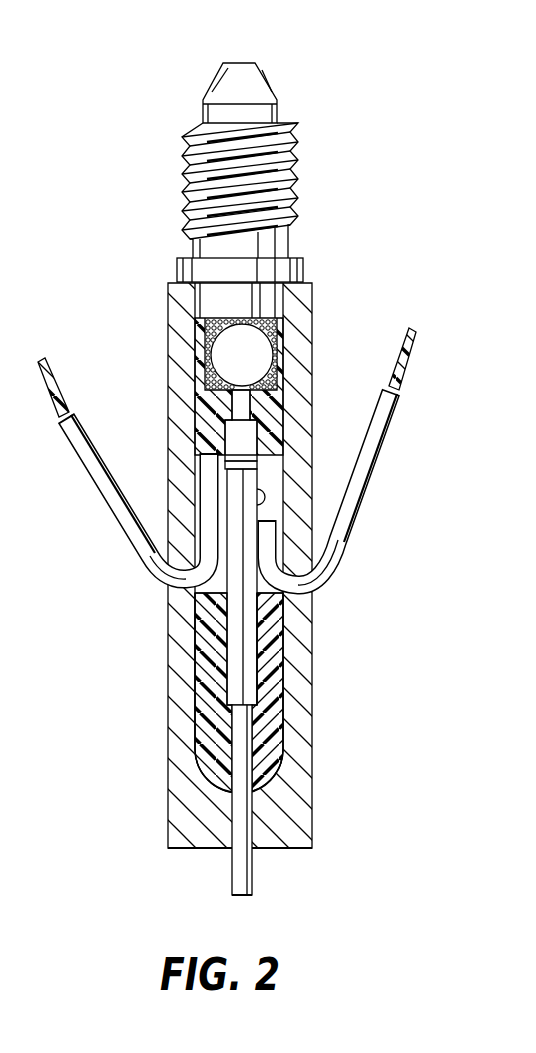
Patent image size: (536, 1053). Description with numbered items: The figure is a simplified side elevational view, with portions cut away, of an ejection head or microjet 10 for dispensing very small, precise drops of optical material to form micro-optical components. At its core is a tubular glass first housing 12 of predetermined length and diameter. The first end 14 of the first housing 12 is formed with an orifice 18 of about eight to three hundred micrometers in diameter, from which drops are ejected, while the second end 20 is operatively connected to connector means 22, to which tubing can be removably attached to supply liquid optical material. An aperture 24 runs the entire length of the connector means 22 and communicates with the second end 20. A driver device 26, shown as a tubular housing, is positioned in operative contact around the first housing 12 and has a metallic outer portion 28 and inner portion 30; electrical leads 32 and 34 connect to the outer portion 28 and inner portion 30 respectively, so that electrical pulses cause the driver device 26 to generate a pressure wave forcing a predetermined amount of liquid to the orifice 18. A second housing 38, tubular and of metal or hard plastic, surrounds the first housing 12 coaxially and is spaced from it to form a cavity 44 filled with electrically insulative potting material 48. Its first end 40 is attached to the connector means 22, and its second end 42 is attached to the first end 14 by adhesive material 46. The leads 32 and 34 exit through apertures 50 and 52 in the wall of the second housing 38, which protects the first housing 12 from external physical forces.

The ejection head 10 is at (160, 103).
The first housing 12 is at (276, 733).
The first end 14 is at (252, 878).
The orifice 18 is at (242, 896).
The second end 20 is at (238, 405).
The connector means 22 is at (300, 158).
The aperture 24 is at (247, 63).
The driver device 26 is at (275, 658).
The outer portion 28 is at (220, 663).
The inner portion 30 is at (258, 432).
The electrical lead 32 is at (378, 472).
The electrical lead 34 is at (88, 480).
The second housing 38 is at (152, 627).
The first end 40 is at (168, 318).
The second end 42 is at (312, 812).
The cavity 44 is at (210, 713).
The adhesive material 46 is at (232, 808).
The potting material 48 is at (272, 619).
The aperture 50 is at (318, 606).
The aperture 52 is at (168, 607).